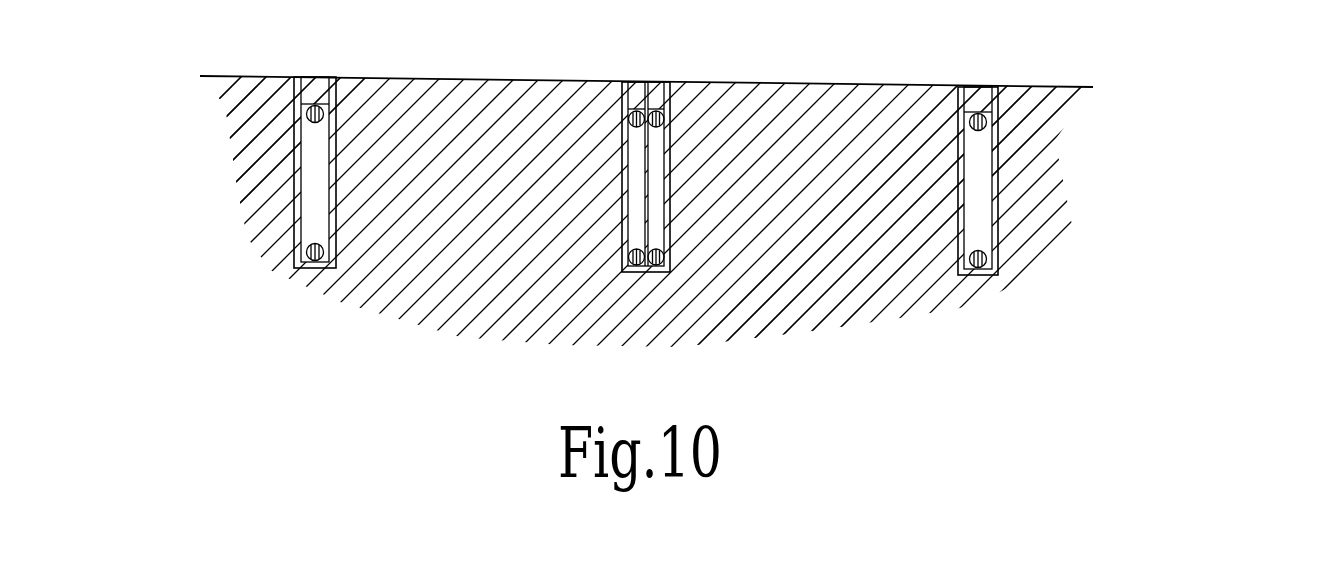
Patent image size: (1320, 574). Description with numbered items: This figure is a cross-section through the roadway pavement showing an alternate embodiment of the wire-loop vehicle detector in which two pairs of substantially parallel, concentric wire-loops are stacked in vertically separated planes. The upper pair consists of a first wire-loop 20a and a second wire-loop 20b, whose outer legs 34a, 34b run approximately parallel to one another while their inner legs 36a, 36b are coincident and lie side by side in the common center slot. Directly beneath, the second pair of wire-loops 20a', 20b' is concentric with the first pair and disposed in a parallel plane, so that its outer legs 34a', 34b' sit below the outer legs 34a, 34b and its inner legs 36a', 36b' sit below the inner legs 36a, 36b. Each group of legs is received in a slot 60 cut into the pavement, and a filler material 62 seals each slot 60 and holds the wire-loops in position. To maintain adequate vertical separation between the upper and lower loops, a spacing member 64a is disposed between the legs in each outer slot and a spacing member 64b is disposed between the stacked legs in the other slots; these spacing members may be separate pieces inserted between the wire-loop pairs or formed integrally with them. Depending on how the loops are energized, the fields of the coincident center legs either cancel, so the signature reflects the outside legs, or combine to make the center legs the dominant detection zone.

The first wire-loop of the first pair 20a is at (154, 210).
The first wire-loop of the second pair 20a' is at (208, 210).
The second wire-loop of the first pair 20b is at (1014, 210).
The second wire-loop of the second pair 20b' is at (976, 210).
The outer leg of first wire-loop 34a is at (273, 78).
The outer leg of first wire-loop of second pair 34a' is at (291, 298).
The outer leg of second wire-loop 34b is at (1035, 90).
The outer leg of second wire-loop of second pair 34b' is at (1025, 295).
The inner leg of first wire-loop 36a is at (591, 82).
The inner leg of first wire-loop of second pair 36a' is at (581, 318).
The inner leg of second wire-loop 36b is at (726, 87).
The inner leg of second wire-loop of second pair 36b' is at (717, 338).
The slot 60 is at (345, 158).
The filler material 62 is at (318, 78).
The spacing member 64a is at (314, 178).
The spacing member 64b is at (666, 194).